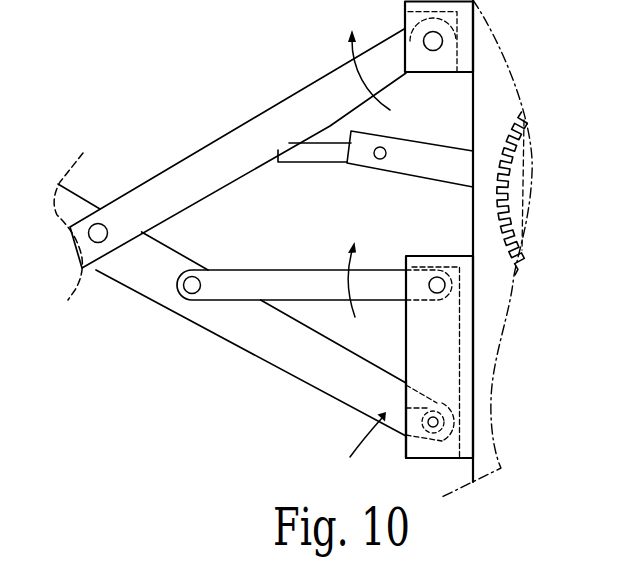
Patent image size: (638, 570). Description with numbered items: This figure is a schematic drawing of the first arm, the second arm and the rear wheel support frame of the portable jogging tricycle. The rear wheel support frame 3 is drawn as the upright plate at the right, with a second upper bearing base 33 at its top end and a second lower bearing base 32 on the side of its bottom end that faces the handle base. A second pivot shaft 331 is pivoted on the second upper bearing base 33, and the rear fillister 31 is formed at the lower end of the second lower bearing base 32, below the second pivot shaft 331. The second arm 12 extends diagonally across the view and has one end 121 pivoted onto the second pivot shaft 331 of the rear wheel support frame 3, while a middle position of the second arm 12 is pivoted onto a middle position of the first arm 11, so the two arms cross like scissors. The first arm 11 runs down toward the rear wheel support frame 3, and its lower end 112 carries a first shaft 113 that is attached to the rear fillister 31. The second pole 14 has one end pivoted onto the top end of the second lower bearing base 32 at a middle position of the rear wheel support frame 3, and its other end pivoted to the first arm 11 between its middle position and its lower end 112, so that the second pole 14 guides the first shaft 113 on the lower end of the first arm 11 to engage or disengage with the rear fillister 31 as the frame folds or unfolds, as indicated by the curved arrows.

The rear wheel support frame 3 is at (478, 203).
The rear fillister 31 is at (435, 449).
The second lower bearing base 32 is at (436, 256).
The second upper bearing base 33 is at (404, 2).
The second pivot shaft 331 is at (436, 47).
The first arm 11 is at (147, 263).
The end of the first arm 112 is at (387, 395).
The first shaft 113 is at (440, 421).
The second arm 12 is at (140, 202).
The end of the second arm 121 is at (392, 53).
The second pole 14 is at (287, 276).